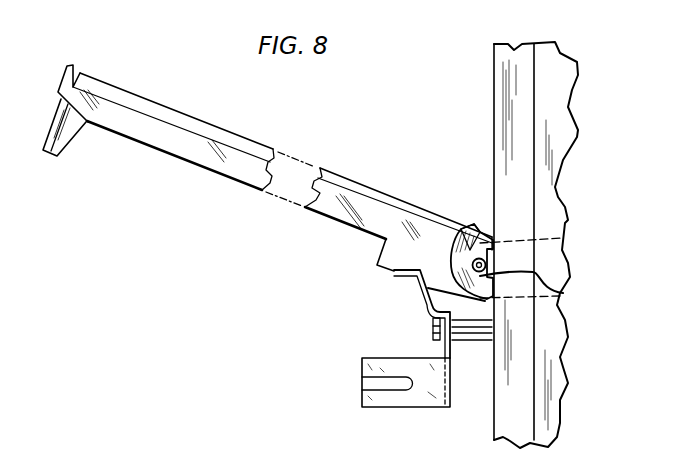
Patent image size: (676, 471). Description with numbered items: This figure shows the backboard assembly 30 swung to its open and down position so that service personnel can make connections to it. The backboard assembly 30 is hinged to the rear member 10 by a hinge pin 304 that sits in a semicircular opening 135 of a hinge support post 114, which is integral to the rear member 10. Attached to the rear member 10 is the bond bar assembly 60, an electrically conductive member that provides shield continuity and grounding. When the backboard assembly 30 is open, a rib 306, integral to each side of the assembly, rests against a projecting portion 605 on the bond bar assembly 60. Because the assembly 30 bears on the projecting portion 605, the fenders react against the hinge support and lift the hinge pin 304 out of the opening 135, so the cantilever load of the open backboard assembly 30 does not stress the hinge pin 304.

The rear member 10 is at (580, 80).
The backboard assembly 30 is at (168, 150).
The bond bar assembly 60 is at (437, 350).
The hinge support post 114 is at (453, 256).
The semicircular opening 135 is at (563, 293).
The hinge pin 304 is at (477, 232).
The rib 306 is at (377, 264).
The projecting portion 605 is at (417, 291).